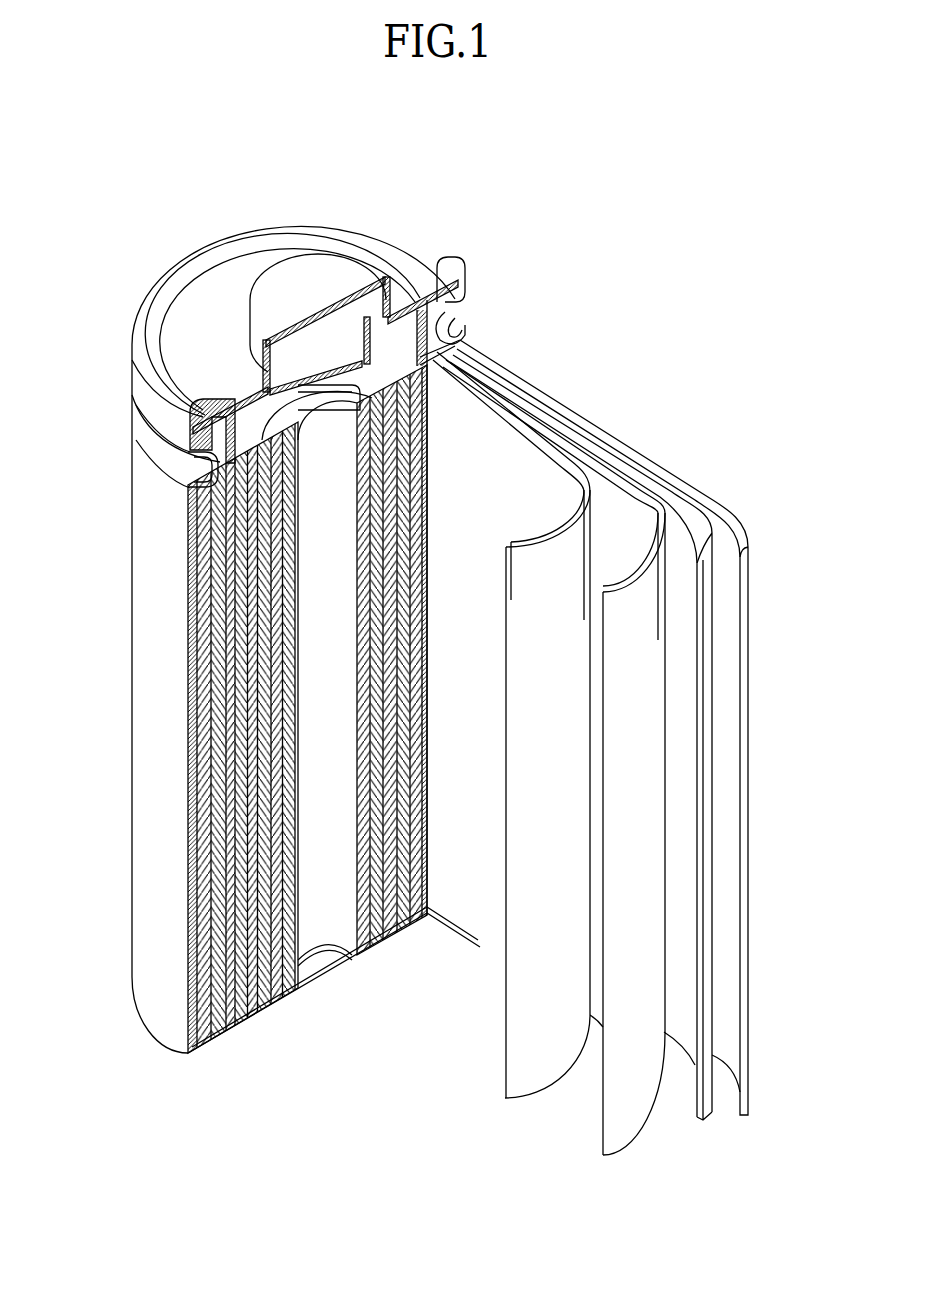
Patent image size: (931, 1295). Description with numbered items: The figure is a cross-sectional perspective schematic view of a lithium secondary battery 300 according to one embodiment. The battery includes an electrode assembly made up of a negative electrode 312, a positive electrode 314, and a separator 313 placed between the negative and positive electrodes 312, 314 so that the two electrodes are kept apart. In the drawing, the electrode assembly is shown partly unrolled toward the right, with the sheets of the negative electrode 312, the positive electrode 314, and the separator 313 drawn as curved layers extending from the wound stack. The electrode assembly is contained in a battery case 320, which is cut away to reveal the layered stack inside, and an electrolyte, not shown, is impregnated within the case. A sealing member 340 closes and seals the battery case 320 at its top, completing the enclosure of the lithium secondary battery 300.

The lithium secondary battery 300 is at (529, 207).
The battery case 320 is at (146, 645).
The sealing member 340 is at (263, 292).
The separator 313 is at (542, 432).
The positive electrode 314 is at (628, 488).
The negative electrode 312 is at (747, 547).